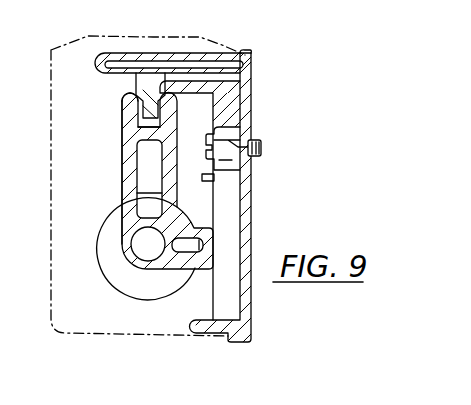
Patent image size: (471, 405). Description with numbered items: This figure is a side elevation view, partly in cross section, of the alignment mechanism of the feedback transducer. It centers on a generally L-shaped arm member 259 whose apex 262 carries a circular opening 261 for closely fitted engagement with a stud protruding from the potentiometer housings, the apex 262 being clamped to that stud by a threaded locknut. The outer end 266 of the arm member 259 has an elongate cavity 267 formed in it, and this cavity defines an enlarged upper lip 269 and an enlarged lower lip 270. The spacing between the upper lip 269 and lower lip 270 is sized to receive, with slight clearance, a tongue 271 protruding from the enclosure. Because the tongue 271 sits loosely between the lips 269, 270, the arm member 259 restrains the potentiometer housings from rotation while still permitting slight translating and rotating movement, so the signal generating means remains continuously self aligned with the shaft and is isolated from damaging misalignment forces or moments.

The arm member 259 is at (122, 167).
The circular opening 261 is at (148, 256).
The apex 262 is at (133, 261).
The outer end 266 is at (122, 117).
The elongate cavity 267 is at (147, 130).
The upper lip 269 is at (138, 105).
The lower lip 270 is at (170, 102).
The tongue 271 is at (147, 91).